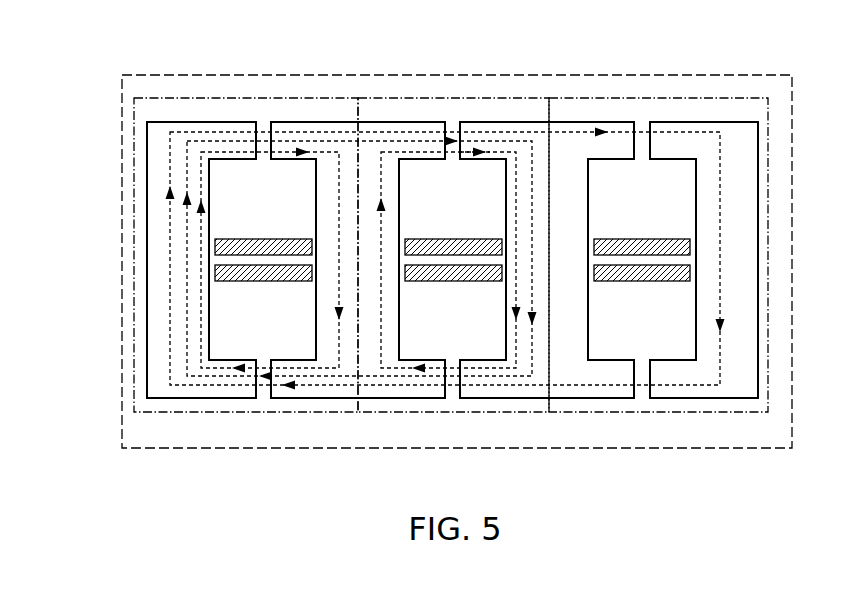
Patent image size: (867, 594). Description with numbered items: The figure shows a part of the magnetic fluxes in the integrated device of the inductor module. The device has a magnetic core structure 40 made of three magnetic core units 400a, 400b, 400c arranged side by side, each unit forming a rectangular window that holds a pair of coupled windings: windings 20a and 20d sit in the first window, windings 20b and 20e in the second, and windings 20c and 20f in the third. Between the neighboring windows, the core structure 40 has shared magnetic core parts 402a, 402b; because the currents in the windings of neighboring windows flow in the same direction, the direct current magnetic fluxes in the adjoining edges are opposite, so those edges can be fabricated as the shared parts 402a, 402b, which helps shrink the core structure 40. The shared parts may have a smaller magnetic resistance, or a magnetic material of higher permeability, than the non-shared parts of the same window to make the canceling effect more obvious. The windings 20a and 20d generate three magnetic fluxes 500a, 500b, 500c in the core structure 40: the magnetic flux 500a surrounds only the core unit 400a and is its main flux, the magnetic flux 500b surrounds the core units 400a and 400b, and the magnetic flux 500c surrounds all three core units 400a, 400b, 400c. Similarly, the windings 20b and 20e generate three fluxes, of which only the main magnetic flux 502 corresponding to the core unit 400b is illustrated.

The magnetic core structure 40 is at (667, 75).
The magnetic core unit 400a is at (167, 98).
The magnetic core unit 400b is at (422, 98).
The magnetic core unit 400c is at (602, 98).
The shared magnetic core part 402a is at (367, 388).
The shared magnetic core part 402b is at (555, 388).
The winding 20a is at (248, 238).
The winding 20b is at (433, 238).
The winding 20c is at (623, 238).
The winding 20d is at (246, 282).
The winding 20e is at (435, 282).
The winding 20f is at (630, 282).
The magnetic flux 500a is at (201, 280).
The magnetic flux 500b is at (187, 305).
The magnetic flux 500c is at (170, 335).
The main magnetic flux 502 is at (500, 150).